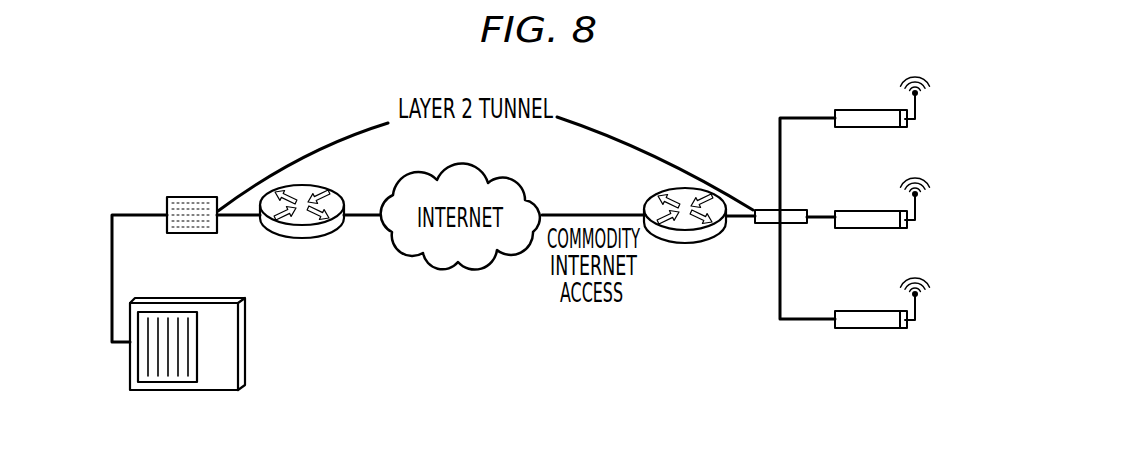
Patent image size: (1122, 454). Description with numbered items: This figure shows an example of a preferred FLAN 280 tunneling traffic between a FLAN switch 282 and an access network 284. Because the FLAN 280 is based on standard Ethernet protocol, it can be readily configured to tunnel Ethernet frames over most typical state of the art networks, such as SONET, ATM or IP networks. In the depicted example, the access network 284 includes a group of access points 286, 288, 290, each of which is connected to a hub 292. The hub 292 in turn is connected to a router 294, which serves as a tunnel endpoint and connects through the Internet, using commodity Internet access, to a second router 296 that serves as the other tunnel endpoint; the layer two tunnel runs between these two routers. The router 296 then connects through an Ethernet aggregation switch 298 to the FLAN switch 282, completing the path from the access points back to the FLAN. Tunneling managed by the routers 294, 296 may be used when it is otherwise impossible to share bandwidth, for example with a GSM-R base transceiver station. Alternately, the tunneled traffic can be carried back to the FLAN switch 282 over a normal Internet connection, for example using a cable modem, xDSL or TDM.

The FLAN 280 is at (772, 437).
The FLAN switch 282 is at (248, 372).
The access network 284 is at (772, 349).
The access point 286 is at (853, 110).
The access point 288 is at (853, 211).
The access point 290 is at (851, 311).
The hub 292 is at (766, 210).
The router 294 is at (650, 200).
The router 296 is at (345, 186).
The Ethernet aggregation switch 298 is at (185, 197).